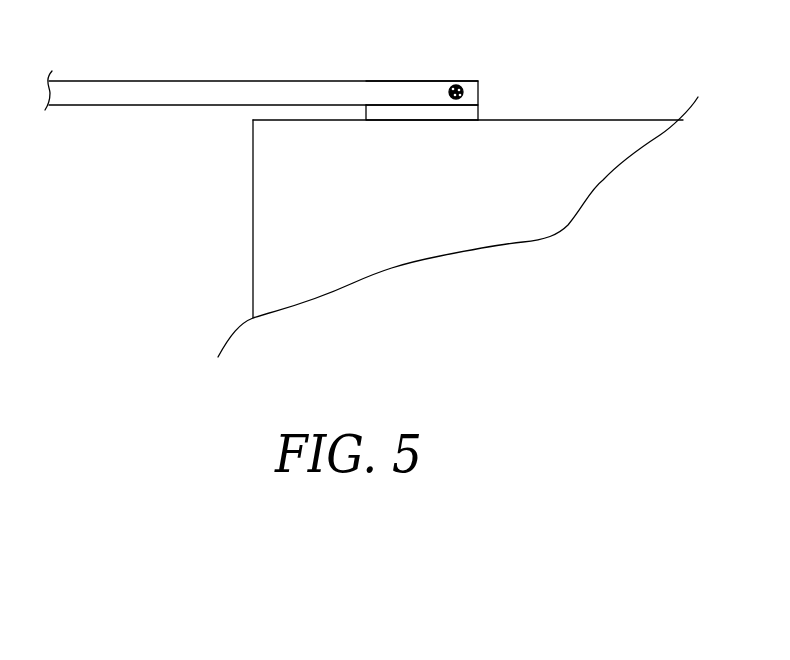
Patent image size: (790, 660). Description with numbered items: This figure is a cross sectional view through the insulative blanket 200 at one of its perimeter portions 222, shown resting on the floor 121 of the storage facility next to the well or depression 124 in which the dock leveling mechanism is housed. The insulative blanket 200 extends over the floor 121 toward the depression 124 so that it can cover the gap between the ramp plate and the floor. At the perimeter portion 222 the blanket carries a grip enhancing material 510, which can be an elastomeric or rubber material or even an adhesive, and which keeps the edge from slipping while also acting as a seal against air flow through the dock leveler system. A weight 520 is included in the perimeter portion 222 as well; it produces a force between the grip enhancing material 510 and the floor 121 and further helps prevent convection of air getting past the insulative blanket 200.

The insulative blanket 200 is at (91, 81).
The perimeter portion 222 is at (378, 90).
The weight 520 is at (457, 84).
The grip enhancing material 510 is at (468, 112).
The floor 121 is at (634, 120).
The well or depression 124 is at (253, 203).